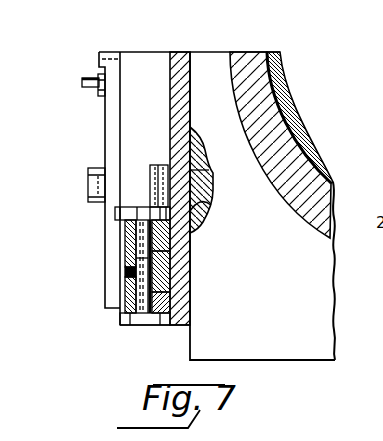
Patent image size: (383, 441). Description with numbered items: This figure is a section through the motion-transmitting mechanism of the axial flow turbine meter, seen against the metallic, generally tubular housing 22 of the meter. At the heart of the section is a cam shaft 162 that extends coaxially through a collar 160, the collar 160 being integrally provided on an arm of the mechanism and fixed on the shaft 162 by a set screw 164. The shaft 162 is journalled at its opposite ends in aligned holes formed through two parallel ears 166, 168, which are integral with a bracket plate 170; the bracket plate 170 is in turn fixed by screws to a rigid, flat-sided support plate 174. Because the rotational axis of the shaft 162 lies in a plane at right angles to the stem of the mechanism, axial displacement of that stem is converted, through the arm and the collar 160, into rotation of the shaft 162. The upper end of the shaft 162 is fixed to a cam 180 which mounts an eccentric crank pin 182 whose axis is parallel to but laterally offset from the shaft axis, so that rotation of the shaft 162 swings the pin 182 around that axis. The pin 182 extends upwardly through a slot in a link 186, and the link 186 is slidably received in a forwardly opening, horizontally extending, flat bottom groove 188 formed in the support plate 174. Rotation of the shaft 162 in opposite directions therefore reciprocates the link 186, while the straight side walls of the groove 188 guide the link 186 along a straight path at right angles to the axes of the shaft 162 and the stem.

The housing 22 is at (284, 118).
The collar 160 is at (125, 284).
The cam shaft 162 is at (142, 257).
The set screw 164 is at (130, 273).
The ear 166 is at (132, 327).
The ear 168 is at (131, 240).
The bracket plate 170 is at (162, 327).
The support plate 174 is at (181, 62).
The cam 180 is at (115, 214).
The crank pin 182 is at (162, 164).
The link 186 is at (213, 183).
The groove 188 is at (205, 206).